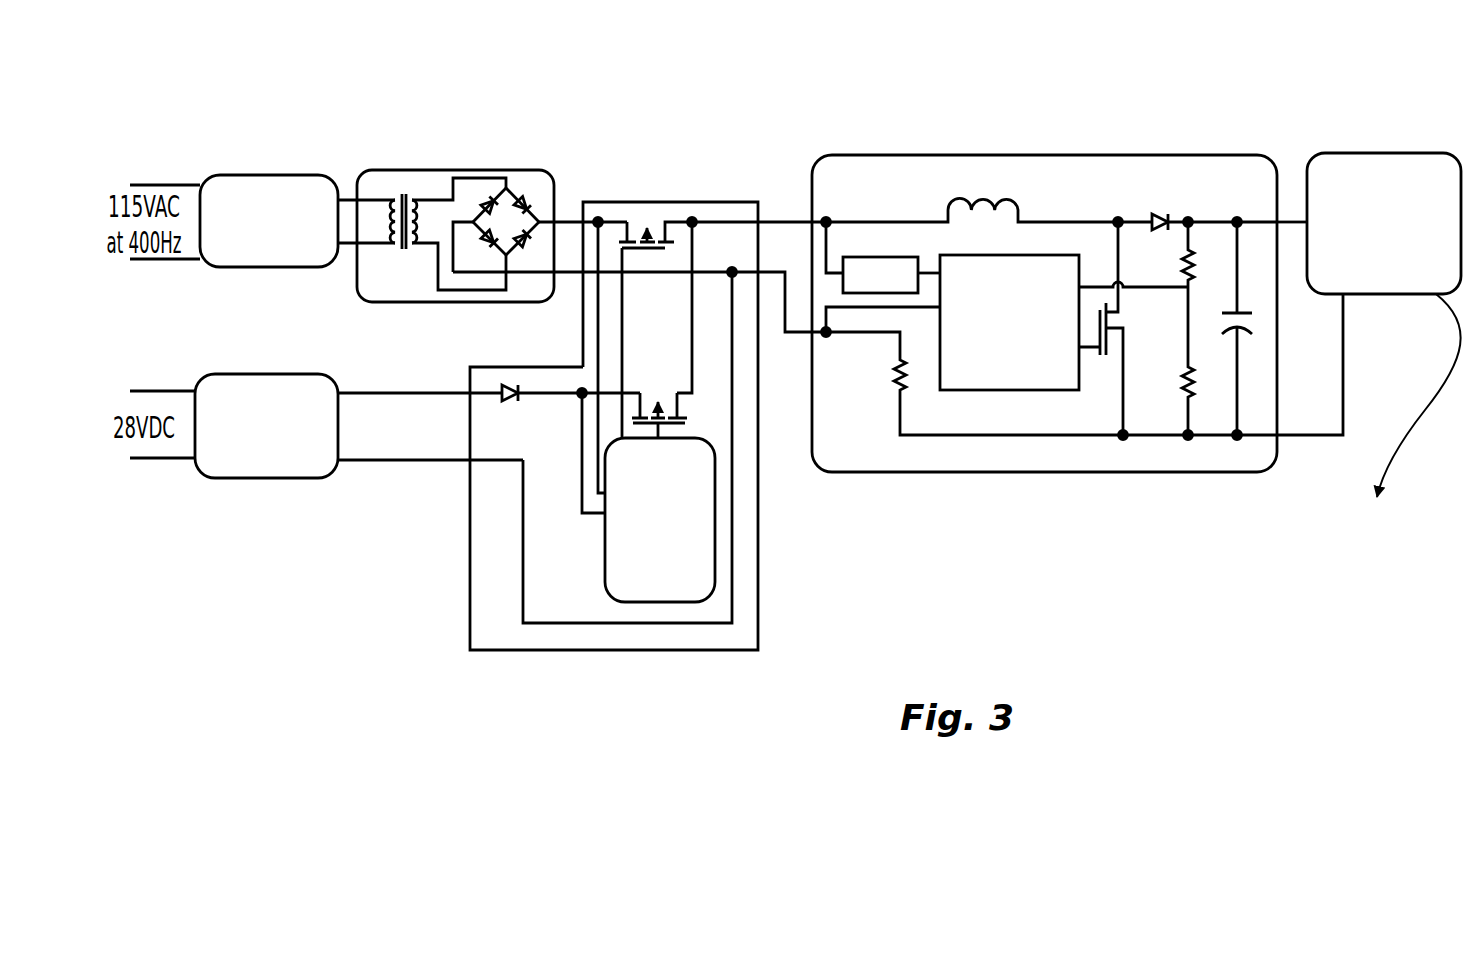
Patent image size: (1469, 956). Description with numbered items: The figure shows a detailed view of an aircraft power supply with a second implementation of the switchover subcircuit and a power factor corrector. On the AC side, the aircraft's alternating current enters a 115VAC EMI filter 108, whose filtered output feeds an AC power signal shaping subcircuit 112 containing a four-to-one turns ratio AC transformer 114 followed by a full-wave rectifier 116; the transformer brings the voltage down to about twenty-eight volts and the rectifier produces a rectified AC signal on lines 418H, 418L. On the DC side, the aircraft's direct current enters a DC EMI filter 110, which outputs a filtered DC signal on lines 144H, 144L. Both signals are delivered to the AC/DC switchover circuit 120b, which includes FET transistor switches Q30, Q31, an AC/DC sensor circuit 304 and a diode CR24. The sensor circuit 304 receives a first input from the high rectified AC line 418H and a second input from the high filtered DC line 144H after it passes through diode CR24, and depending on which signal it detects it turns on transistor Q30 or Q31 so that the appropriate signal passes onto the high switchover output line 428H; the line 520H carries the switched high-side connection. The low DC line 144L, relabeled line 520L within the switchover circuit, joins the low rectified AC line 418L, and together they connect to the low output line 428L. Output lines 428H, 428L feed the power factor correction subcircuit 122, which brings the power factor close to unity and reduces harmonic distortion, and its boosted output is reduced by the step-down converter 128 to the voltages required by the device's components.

The 115VAC 400 Hz EMI filter 108 is at (273, 173).
The 28 VDC EMI filter 110 is at (262, 479).
The AC power signal shaping subcircuit 112 is at (475, 168).
The AC transformer 114 is at (400, 190).
The full-wave rectifier 116 is at (536, 204).
The AC/DC switchover circuit 120b is at (698, 202).
The power factor correction subcircuit 122 is at (1247, 154).
The step-down converter 128 is at (1398, 152).
The high filtered DC signal line 144H is at (397, 392).
The low filtered DC signal line 144L is at (362, 461).
The AC/DC sensor circuit 304 is at (662, 603).
The high rectified AC signal line 418H is at (577, 221).
The low rectified AC signal line 418L is at (567, 274).
The high AC/DC switchover output line 428H is at (797, 221).
The low AC/DC switchover output line 428L is at (790, 335).
The switched high line 520H is at (693, 252).
The low DC line within switchover circuit 520L is at (757, 545).
The diode CR24 is at (505, 412).
The FET transistor switch Q30 is at (652, 213).
The FET transistor switch Q31 is at (670, 390).